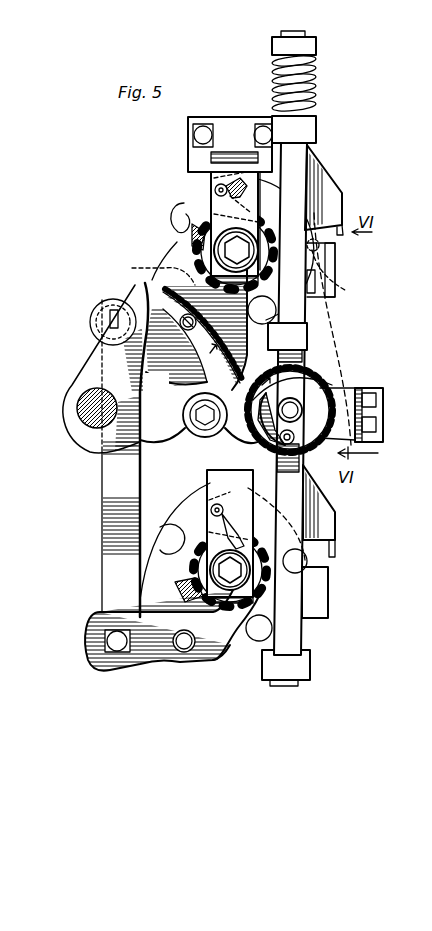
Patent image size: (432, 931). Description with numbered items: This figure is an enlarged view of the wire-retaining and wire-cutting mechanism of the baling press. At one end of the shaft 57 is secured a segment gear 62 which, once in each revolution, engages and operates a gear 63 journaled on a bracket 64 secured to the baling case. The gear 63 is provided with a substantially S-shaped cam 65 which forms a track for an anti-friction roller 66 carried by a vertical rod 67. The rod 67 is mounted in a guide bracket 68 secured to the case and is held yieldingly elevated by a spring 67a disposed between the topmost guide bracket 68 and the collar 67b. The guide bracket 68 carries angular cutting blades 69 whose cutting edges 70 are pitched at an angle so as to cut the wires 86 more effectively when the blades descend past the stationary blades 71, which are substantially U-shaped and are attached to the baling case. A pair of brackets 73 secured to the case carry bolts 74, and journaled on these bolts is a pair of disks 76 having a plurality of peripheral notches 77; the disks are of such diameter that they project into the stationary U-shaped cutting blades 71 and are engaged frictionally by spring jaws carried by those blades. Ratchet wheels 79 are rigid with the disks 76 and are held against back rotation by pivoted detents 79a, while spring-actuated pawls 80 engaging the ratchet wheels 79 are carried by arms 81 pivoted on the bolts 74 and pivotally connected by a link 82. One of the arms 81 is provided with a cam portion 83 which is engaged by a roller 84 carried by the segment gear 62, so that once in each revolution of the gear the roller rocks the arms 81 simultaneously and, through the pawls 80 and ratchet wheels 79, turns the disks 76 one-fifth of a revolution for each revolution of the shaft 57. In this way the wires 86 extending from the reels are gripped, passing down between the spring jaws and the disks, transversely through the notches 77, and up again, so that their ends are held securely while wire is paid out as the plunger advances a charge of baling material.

The shaft 57 is at (76, 408).
The segment gear 62 is at (86, 367).
The gear 63 is at (322, 382).
The bracket 64 is at (383, 413).
The S-shaped cam 65 is at (262, 452).
The anti-friction roller 66 is at (300, 447).
The vertical rod 67 is at (290, 640).
The spring 67a is at (318, 82).
The collar 67b is at (308, 47).
The guide bracket 68 is at (308, 125).
The angular cutting blades 69 is at (343, 203).
The cutting edges 70 is at (348, 226).
The stationary blades 71 is at (336, 257).
The brackets 73 is at (187, 137).
The bolts 74 is at (234, 378).
The disks 76 is at (180, 208).
The peripheral notches 77 is at (165, 217).
The ratchet wheels 79 is at (187, 238).
The pivoted detents 79a is at (221, 190).
The spring-actuated pawls 80 is at (180, 594).
The arms 81 is at (92, 306).
The link 82 is at (104, 510).
The cam portion 83 is at (176, 378).
The roller 84 is at (195, 432).
The wires 86 is at (308, 281).